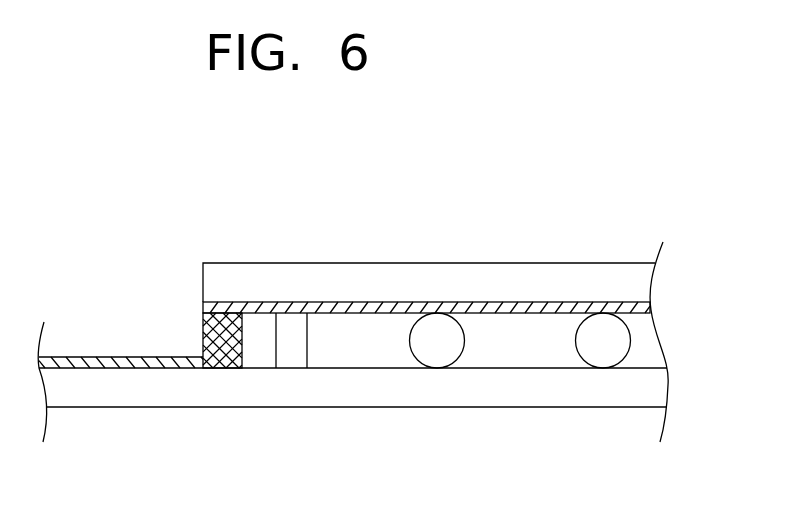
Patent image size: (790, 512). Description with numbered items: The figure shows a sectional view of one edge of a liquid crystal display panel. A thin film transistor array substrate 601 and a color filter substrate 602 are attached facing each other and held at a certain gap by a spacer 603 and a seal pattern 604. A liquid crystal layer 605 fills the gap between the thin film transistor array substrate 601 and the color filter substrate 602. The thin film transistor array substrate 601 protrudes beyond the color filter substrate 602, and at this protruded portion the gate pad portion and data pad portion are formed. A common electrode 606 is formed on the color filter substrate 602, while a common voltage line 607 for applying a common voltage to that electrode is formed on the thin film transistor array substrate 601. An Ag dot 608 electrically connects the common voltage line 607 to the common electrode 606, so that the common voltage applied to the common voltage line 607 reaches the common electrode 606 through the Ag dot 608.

The thin film transistor array substrate 601 is at (538, 392).
The color filter substrate 602 is at (247, 283).
The spacer 603 is at (602, 353).
The seal pattern 604 is at (293, 352).
The liquid crystal layer 605 is at (507, 346).
The common electrode 606 is at (217, 308).
The common voltage line 607 is at (83, 363).
The Ag dot 608 is at (213, 337).